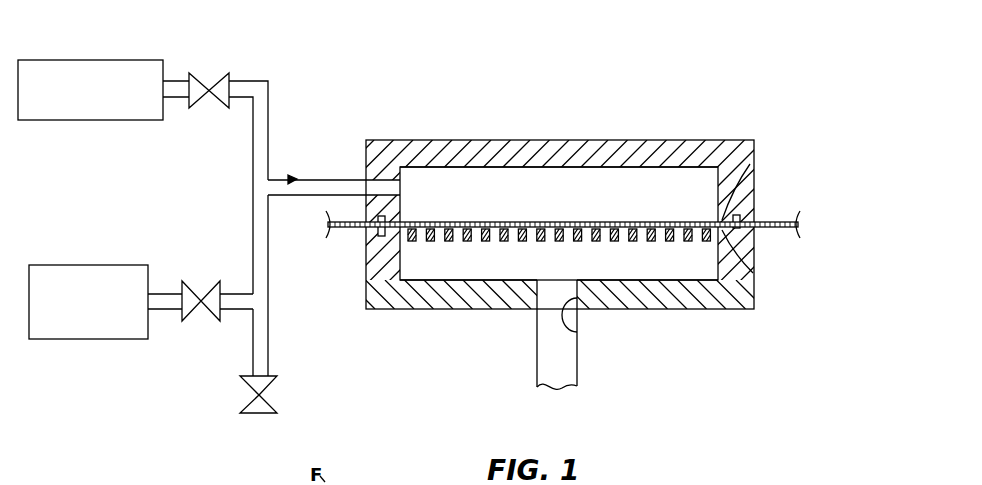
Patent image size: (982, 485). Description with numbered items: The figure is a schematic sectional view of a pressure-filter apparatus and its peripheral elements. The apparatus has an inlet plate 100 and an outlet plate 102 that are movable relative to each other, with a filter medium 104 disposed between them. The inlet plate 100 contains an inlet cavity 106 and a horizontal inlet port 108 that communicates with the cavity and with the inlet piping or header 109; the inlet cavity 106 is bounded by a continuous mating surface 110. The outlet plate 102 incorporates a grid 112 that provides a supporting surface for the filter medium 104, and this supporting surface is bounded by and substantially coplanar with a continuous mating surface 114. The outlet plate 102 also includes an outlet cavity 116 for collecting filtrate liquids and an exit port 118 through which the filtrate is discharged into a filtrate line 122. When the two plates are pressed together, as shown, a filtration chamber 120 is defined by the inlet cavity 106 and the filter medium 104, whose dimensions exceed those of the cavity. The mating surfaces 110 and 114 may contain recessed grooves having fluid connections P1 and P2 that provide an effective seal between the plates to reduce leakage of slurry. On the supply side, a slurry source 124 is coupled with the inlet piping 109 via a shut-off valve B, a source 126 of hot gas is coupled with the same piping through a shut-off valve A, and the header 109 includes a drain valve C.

The inlet plate 100 is at (562, 236).
The outlet plate 102 is at (458, 312).
The filter medium 104 is at (770, 223).
The inlet cavity 106 is at (432, 171).
The inlet port 108 is at (378, 176).
The inlet piping (header) 109 is at (250, 139).
The continuous mating surface 110 is at (751, 168).
The grid 112 is at (611, 243).
The continuous mating surface 114 is at (753, 265).
The outlet cavity 116 is at (452, 283).
The exit port 118 is at (578, 328).
The filtration chamber 120 is at (582, 206).
The filtrate line 122 is at (560, 334).
The slurry source 124 is at (113, 342).
The source of hot gas 126 is at (125, 122).
The shut-off valve A is at (222, 80).
The shut-off valve B is at (213, 288).
The drain valve C is at (247, 388).
The fluid connection P1 is at (380, 218).
The fluid connection P2 is at (378, 276).